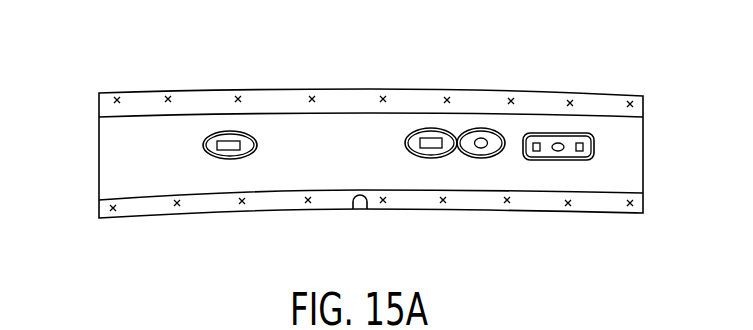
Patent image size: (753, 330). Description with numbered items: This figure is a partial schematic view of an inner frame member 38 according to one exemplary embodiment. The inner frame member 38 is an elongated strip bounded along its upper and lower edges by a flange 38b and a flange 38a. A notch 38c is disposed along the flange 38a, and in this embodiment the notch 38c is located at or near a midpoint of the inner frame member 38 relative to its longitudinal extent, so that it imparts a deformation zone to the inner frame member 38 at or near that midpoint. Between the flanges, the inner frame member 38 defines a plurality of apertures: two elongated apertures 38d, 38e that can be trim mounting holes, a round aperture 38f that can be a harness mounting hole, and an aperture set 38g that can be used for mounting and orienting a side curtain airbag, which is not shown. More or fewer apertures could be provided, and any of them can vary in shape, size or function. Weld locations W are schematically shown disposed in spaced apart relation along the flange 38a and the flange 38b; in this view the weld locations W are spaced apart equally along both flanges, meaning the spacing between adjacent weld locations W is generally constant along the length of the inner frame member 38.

The inner frame member 38 is at (450, 71).
The flange 38a is at (138, 209).
The flange 38b is at (144, 100).
The notch 38c is at (355, 215).
The elongated aperture 38d is at (210, 129).
The elongated aperture 38e is at (408, 127).
The round aperture 38f is at (493, 127).
The aperture set 38g is at (555, 165).
The weld locations W is at (244, 99).